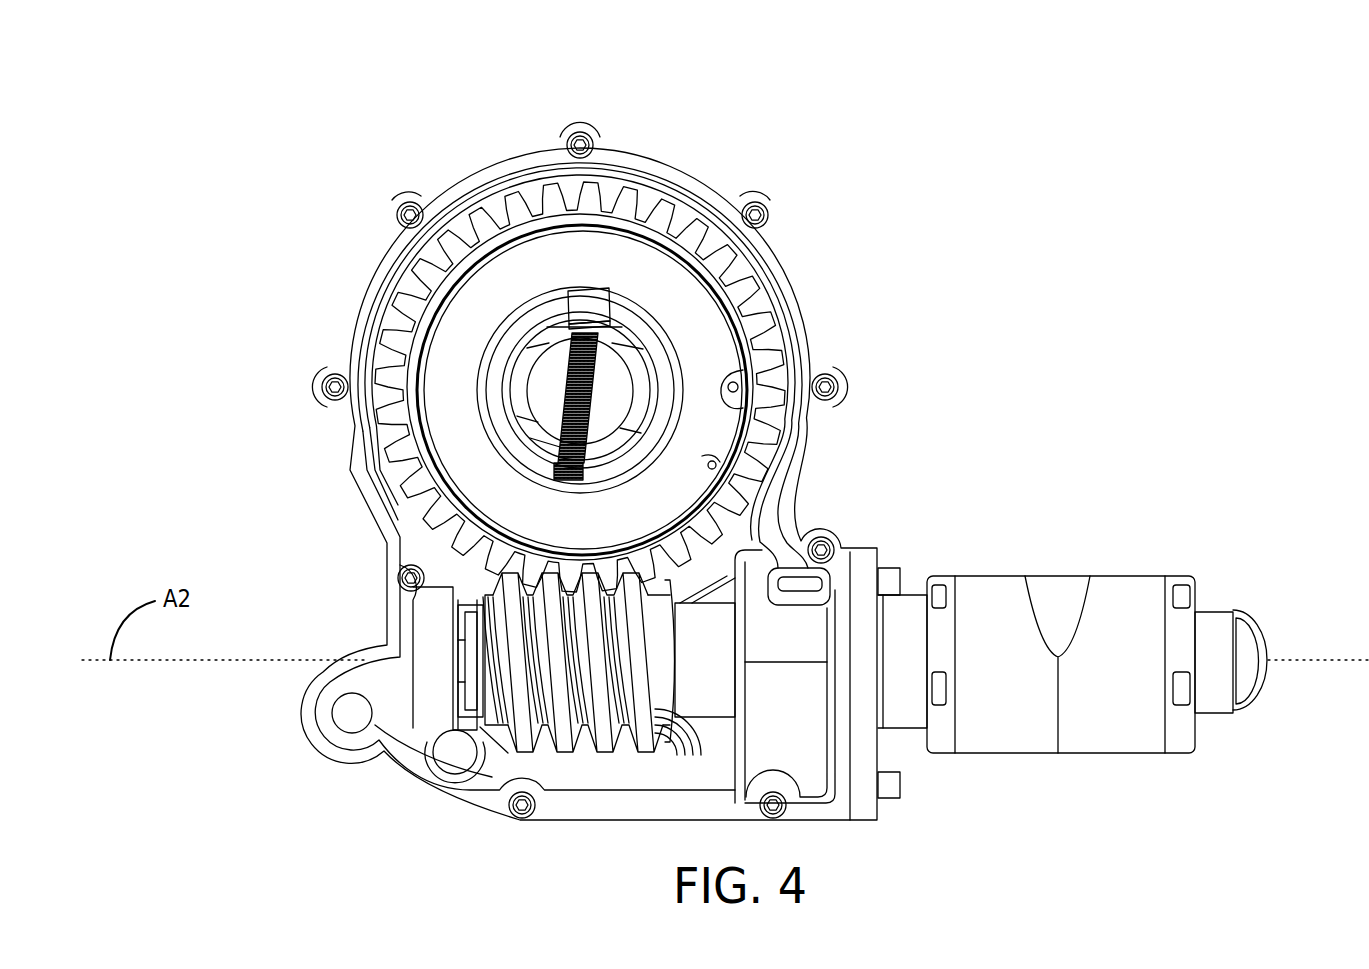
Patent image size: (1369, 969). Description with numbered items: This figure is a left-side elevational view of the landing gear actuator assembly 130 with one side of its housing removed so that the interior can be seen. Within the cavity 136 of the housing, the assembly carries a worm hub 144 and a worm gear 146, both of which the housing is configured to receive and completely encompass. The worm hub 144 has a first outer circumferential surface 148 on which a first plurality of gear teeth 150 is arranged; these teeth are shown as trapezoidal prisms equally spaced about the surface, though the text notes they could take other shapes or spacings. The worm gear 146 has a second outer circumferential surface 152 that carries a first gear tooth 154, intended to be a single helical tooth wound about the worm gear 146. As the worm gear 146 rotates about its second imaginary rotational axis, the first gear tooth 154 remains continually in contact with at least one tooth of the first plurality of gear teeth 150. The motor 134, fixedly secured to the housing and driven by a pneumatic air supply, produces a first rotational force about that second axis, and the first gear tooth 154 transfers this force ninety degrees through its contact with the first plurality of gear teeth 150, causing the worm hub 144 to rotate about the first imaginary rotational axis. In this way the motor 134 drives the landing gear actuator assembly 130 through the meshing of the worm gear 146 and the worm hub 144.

The landing gear actuator assembly 130 is at (858, 168).
The motor 134 is at (1003, 576).
The cavity 136 is at (720, 784).
The worm hub 144 is at (750, 347).
The worm gear 146 is at (685, 690).
The first outer circumferential surface 148 is at (610, 210).
The first plurality of gear teeth 150 is at (547, 193).
The second outer circumferential surface 152 is at (633, 745).
The first gear tooth 154 is at (533, 745).